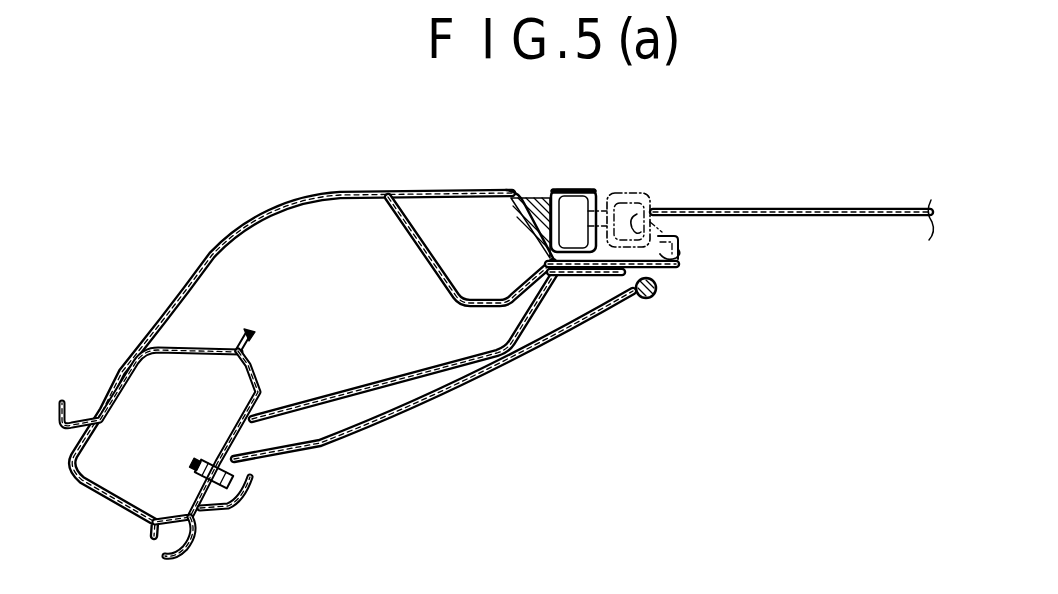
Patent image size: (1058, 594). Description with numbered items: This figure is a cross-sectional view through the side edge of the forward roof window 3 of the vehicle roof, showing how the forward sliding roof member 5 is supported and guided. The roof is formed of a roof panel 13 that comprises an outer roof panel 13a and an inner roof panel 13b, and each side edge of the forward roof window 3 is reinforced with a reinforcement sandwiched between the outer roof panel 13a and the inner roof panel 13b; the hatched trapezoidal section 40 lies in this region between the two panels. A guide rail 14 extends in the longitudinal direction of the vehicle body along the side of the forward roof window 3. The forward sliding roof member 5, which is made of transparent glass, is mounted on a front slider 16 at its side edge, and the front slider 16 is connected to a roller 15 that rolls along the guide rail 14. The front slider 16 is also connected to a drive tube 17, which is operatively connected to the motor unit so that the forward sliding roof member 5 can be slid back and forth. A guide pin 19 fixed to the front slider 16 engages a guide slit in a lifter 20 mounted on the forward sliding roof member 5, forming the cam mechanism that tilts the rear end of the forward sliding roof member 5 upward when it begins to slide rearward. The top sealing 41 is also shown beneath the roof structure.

The forward roof window 3 is at (850, 301).
The forward sliding roof member 5 is at (888, 212).
The roof panel 13 is at (310, 345).
The outer roof panel 13a is at (323, 192).
The inner roof panel 13b is at (352, 387).
The guide rail 14 is at (583, 188).
The roller 15 is at (566, 180).
The front slider 16 is at (648, 192).
The drive tube 17 is at (638, 226).
The guide pin 19 is at (694, 236).
The lifter 20 is at (678, 250).
The reinforcement panel 40 is at (430, 259).
The top sealing 41 is at (474, 387).